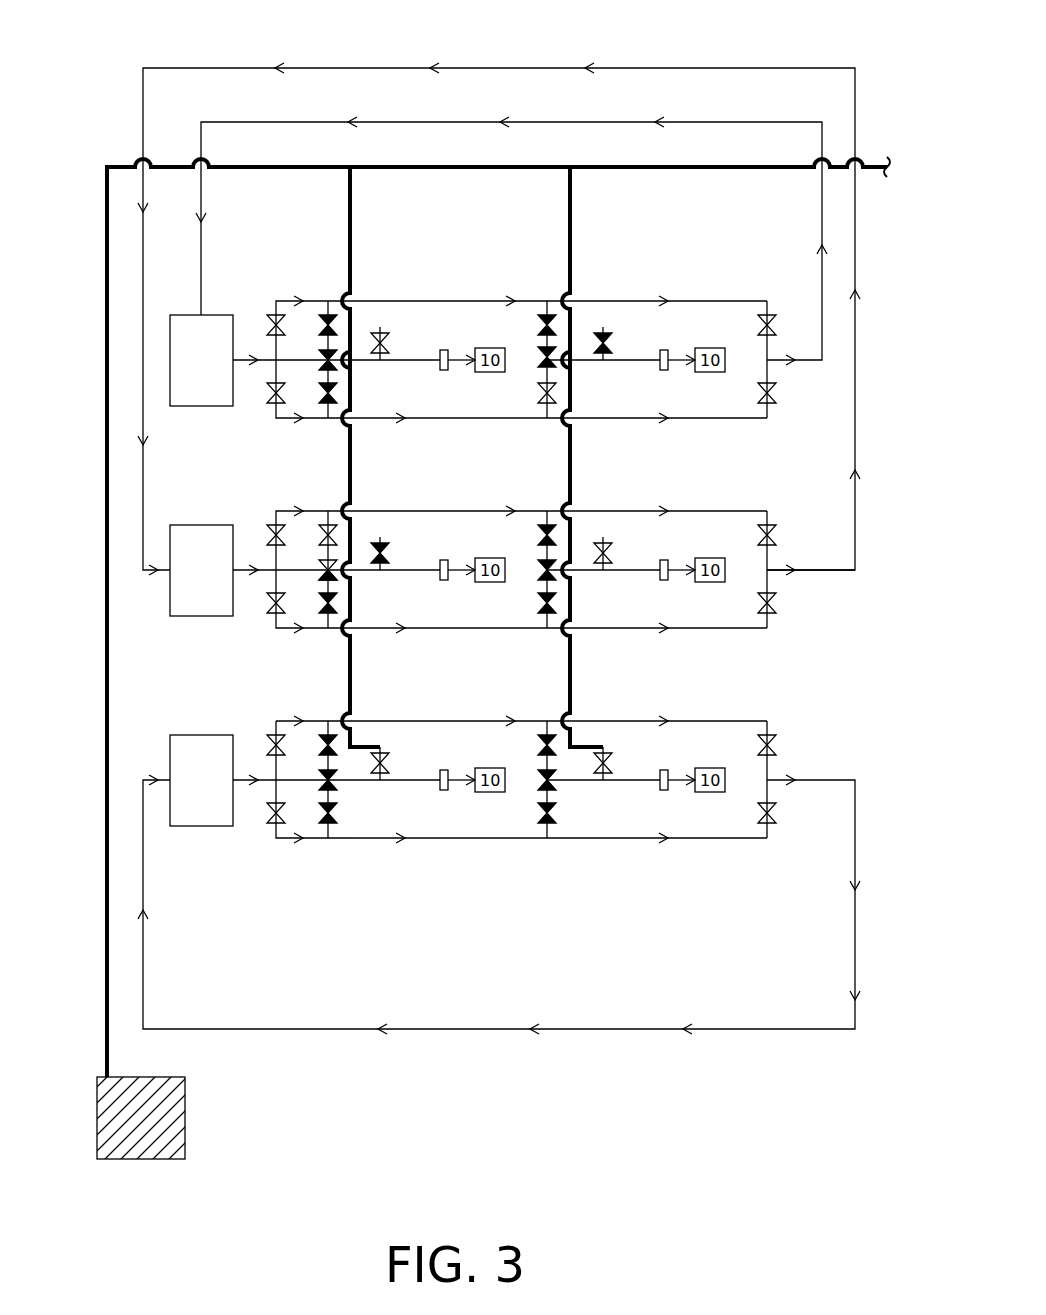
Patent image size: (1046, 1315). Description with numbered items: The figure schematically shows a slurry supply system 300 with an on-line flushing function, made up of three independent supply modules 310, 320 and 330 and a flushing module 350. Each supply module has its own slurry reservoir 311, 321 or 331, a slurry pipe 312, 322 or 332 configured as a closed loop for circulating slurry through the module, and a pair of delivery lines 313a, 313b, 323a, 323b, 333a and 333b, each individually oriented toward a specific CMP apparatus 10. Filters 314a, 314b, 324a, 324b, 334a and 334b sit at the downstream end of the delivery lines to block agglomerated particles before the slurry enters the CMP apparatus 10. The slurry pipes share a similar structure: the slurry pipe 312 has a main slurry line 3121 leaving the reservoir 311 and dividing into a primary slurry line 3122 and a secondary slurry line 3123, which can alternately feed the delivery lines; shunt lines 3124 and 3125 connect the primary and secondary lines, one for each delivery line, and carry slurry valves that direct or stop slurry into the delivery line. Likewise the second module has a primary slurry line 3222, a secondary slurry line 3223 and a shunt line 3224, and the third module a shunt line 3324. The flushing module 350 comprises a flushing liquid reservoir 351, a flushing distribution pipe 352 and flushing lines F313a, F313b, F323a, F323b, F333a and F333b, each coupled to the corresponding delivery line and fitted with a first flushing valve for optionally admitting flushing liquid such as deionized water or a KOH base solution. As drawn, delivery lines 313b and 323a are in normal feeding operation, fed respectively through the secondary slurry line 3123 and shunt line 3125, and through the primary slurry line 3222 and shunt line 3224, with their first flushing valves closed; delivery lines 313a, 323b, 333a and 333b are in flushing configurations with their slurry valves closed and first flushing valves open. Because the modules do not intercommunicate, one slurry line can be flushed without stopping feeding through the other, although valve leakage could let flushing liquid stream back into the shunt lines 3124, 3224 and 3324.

The slurry supply system 300 is at (464, 582).
The supply module 310 is at (571, 323).
The slurry reservoir 311 is at (201, 360).
The slurry pipe 312 is at (787, 122).
The main slurry line 3121 is at (262, 356).
The primary slurry line 3122 is at (303, 299).
The secondary slurry line 3123 is at (312, 420).
The shunt line 3124 is at (333, 303).
The shunt line 3125 is at (551, 303).
The flushing line F313a is at (371, 300).
The flushing line F313b is at (592, 300).
The delivery line 313a is at (428, 358).
The delivery line 313b is at (648, 358).
The filter 314a is at (448, 399).
The filter 314b is at (663, 390).
The CMP apparatus 10 is at (490, 360).
The supply module 320 is at (571, 560).
The slurry reservoir 321 is at (201, 570).
The slurry pipe 322 is at (820, 570).
The primary slurry line 3222 is at (298, 511).
The secondary slurry line 3223 is at (312, 630).
The shunt line 3224 is at (330, 511).
The flushing line F323a is at (365, 535).
The flushing line F323b is at (585, 533).
The delivery line 323a is at (428, 568).
The delivery line 323b is at (648, 568).
The filter 324a is at (448, 610).
The filter 324b is at (663, 602).
The supply module 330 is at (571, 771).
The slurry reservoir 331 is at (201, 780).
The slurry pipe 332 is at (855, 915).
The shunt line 3324 is at (328, 840).
The flushing line F333a is at (362, 745).
The flushing line F333b is at (585, 745).
The delivery line 333a is at (428, 778).
The delivery line 333b is at (648, 778).
The filter 334a is at (448, 820).
The filter 334b is at (663, 812).
The flushing module 350 is at (100, 650).
The flushing liquid reservoir 351 is at (141, 1118).
The flushing distribution pipe 352 is at (107, 486).